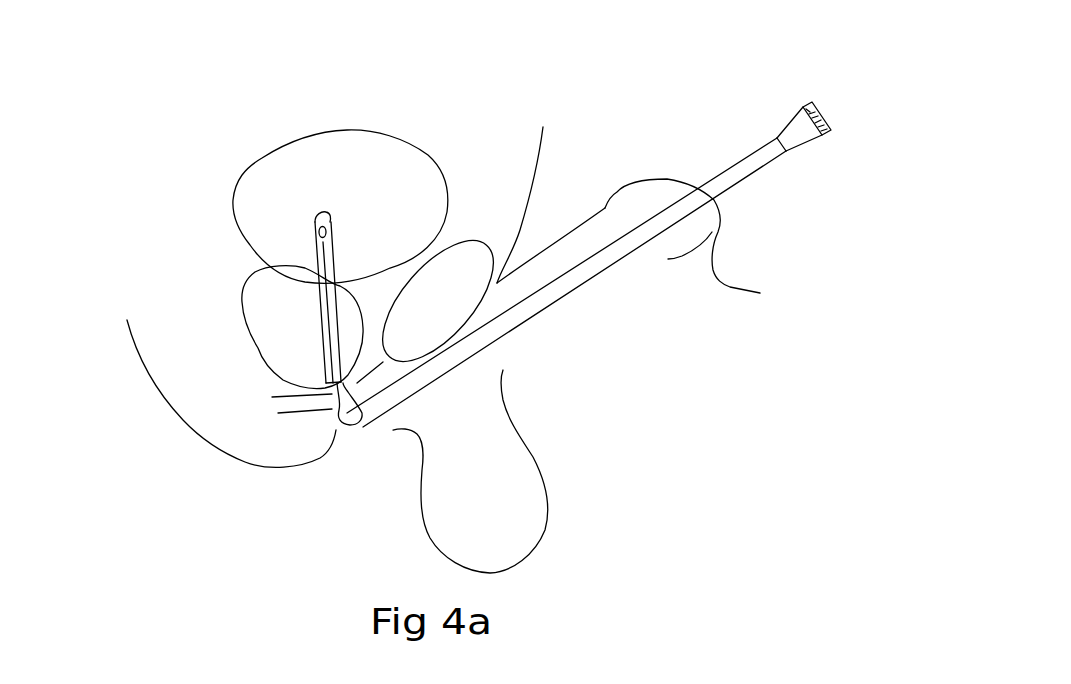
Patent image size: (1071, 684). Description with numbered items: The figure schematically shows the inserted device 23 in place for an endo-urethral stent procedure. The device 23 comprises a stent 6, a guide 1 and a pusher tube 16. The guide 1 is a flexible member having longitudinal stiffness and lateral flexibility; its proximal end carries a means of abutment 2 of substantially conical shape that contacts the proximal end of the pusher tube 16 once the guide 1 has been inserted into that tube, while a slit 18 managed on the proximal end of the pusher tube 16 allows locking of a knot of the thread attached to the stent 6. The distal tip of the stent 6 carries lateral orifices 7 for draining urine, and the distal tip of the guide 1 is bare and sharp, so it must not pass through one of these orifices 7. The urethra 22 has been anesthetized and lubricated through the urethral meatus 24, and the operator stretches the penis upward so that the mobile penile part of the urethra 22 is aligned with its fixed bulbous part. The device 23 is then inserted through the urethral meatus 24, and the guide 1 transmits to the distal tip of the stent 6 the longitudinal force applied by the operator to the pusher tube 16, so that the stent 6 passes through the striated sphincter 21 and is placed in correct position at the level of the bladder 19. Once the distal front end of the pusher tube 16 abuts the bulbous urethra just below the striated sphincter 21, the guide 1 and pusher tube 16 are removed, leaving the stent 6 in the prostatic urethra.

The guide 1 is at (345, 428).
The means of abutment 2 is at (827, 140).
The stent 6 is at (303, 292).
The orifices 7 is at (327, 218).
The pusher tube 16 is at (723, 157).
The slit 18 is at (261, 335).
The bladder 19 is at (254, 186).
The striated sphincter 21 is at (335, 417).
The urethra 22 is at (393, 430).
The device 23 is at (616, 301).
The urethral meatus 24 is at (706, 247).